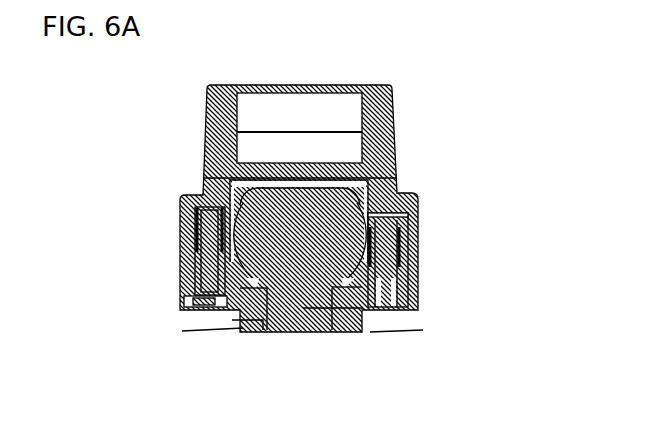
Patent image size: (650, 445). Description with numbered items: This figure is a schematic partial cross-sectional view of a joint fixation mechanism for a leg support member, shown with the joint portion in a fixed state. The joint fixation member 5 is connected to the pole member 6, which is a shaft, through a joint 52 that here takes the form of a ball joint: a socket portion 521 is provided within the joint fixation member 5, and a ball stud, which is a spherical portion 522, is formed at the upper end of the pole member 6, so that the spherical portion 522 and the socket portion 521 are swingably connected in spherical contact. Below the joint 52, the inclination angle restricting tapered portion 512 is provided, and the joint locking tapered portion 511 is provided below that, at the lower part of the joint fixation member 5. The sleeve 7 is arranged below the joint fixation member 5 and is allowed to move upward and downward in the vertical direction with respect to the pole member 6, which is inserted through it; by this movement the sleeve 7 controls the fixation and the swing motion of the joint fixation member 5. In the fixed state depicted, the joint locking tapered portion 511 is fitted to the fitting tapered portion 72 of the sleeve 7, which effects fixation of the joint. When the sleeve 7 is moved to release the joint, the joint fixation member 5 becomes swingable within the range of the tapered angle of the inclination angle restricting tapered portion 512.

The joint fixation member 5 is at (385, 123).
The joint 52 is at (322, 243).
The socket portion 521 is at (205, 193).
The spherical portion 522 is at (365, 248).
The inclination angle restricting tapered portion 512 is at (252, 282).
The joint locking tapered portion 511 is at (183, 286).
The fitting tapered portion 72 is at (237, 316).
The sleeve 7 is at (243, 329).
The pole member 6 is at (363, 310).